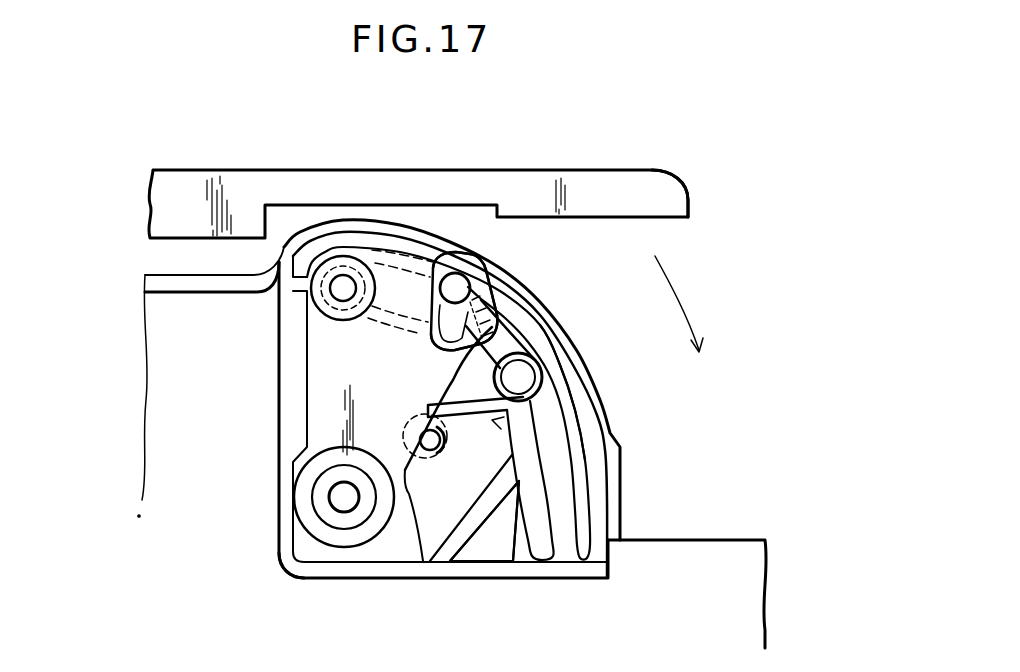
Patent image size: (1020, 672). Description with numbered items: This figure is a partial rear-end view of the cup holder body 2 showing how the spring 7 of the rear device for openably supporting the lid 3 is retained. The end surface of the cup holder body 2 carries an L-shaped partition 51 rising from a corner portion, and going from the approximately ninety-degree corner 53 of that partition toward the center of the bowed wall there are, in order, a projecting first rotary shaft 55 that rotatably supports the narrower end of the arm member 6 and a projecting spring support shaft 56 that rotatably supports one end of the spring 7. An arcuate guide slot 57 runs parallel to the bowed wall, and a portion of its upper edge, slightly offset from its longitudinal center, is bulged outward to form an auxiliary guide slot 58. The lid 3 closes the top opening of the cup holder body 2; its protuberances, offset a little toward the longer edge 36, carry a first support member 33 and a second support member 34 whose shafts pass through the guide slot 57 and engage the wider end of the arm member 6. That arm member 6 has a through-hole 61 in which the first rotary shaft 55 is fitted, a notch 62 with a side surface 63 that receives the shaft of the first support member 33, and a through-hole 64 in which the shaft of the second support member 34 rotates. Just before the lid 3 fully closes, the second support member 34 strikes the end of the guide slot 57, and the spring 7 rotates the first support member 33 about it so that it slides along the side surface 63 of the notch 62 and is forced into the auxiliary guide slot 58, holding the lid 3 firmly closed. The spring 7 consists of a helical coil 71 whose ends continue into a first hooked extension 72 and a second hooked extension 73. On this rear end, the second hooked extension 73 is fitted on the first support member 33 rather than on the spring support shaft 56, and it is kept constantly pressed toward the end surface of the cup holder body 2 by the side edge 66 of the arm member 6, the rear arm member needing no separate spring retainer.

The cup holder body 2 is at (168, 286).
The lid 3 is at (203, 190).
The arm member 6 is at (318, 383).
The spring 7 is at (545, 428).
The first support member 33 is at (443, 262).
The second support member 34 is at (345, 284).
The longer edge 36 is at (662, 183).
The L-shaped partition 51 is at (483, 570).
The corner 53 is at (285, 563).
The first rotary shaft 55 is at (344, 500).
The spring support shaft 56 is at (428, 450).
The guide slot 57 is at (556, 414).
The auxiliary guide slot 58 is at (455, 286).
The through-hole 61 is at (318, 471).
The notch 62 is at (428, 332).
The side surface 63 is at (433, 307).
The through-hole 64 is at (327, 270).
The side edge 66 is at (490, 306).
The helical coil 71 is at (540, 358).
The first hooked extension 72 is at (494, 422).
The second hooked extension 73 is at (478, 264).